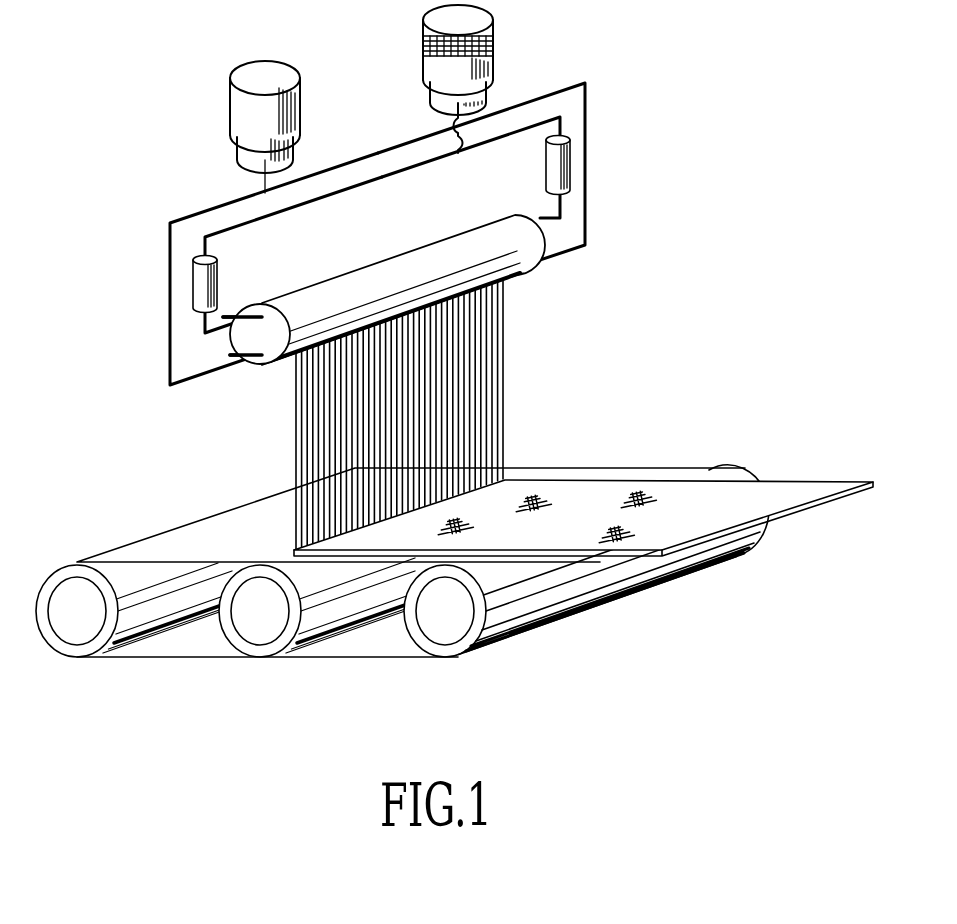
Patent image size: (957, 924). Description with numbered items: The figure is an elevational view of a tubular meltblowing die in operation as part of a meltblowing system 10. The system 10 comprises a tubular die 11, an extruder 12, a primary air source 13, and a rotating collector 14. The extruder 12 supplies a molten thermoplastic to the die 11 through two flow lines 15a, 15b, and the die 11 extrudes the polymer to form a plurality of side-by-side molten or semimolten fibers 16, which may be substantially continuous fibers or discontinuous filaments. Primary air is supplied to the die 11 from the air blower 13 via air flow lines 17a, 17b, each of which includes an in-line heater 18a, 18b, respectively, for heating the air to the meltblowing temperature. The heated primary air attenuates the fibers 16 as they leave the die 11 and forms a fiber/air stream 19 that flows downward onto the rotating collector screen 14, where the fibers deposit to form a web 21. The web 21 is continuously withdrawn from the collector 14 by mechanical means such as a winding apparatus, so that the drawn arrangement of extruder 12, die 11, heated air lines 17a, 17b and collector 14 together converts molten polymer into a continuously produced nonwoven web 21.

The meltblowing system 10 is at (196, 78).
The tubular die 11 is at (545, 268).
The extruder 12 is at (230, 115).
The primary air source 13 is at (492, 62).
The rotating collector 14 is at (176, 528).
The flow line 15a is at (168, 364).
The flow line 15b is at (588, 200).
The fibers 16 is at (495, 337).
The air flow line 17a is at (220, 317).
The air flow line 17b is at (547, 212).
The in-line heater 18a is at (193, 286).
The in-line heater 18b is at (570, 172).
The fiber/air stream 19 is at (450, 437).
The web 21 is at (606, 490).